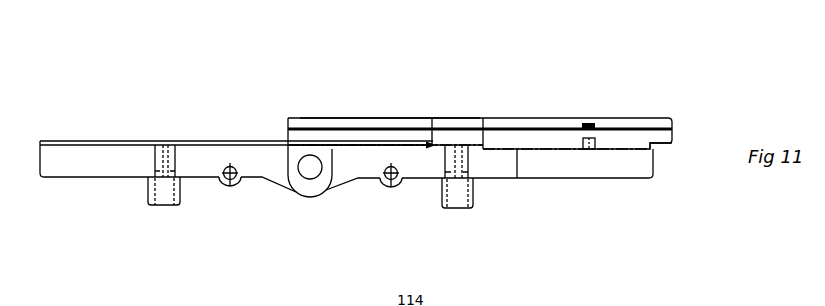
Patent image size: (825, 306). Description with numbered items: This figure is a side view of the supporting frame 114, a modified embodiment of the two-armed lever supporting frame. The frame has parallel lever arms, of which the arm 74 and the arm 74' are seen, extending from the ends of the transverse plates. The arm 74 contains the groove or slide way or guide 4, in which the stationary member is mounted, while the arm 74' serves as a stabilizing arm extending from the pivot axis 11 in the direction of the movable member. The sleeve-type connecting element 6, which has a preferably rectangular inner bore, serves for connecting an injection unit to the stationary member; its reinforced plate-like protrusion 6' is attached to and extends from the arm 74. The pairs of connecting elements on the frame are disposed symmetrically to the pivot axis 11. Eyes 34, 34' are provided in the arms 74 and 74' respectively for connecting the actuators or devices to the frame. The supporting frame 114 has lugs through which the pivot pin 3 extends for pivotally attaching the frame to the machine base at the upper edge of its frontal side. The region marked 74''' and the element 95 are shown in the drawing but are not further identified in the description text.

The pivot pin 3 is at (346, 198).
The groove or slide way or guide 4 is at (530, 118).
The sleeve-type connecting element 6 is at (443, 200).
The reinforced plate-like protrusion 6' is at (153, 200).
The pivot axis 11 is at (311, 168).
The eye 34 is at (385, 209).
The eye 34' is at (235, 209).
The arm 74 is at (469, 190).
The arm 74' is at (238, 98).
The spring bar end 74''' is at (675, 200).
The hanger 95 is at (289, 148).
The supporting frame 114 is at (393, 101).